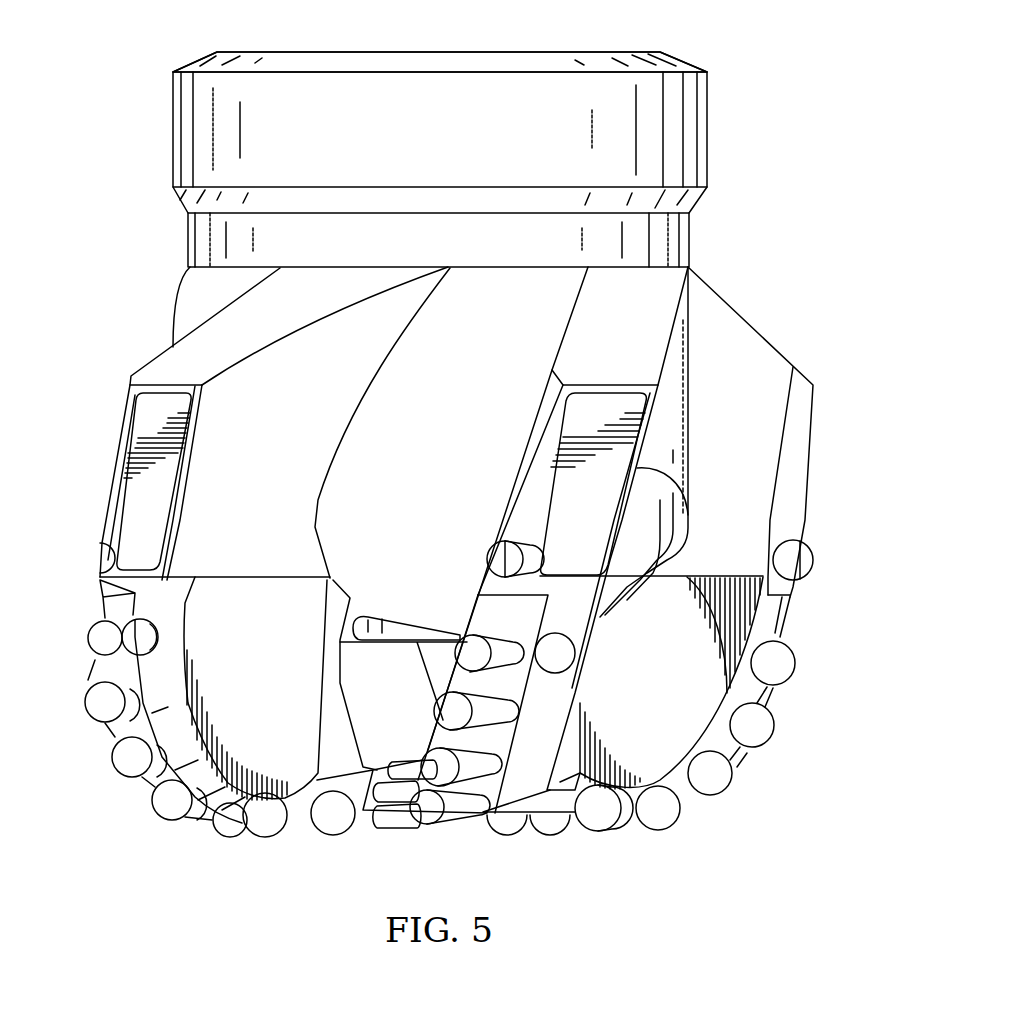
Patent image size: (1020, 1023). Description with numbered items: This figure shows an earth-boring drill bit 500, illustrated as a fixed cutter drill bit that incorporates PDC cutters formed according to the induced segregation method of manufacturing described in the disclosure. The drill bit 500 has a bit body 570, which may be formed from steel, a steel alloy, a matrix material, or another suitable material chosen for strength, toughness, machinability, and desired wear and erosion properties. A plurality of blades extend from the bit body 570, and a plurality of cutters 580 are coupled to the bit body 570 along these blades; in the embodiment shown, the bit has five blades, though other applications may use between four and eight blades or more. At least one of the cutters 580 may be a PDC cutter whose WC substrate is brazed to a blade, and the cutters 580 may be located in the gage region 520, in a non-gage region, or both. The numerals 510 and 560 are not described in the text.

The earth-boring drill bit 500 is at (150, 356).
The bit body 510 is at (642, 468).
The gage region 520 is at (498, 606).
The shank 560 is at (118, 187).
The bit body 570 is at (678, 63).
The cutters 580 is at (92, 707).